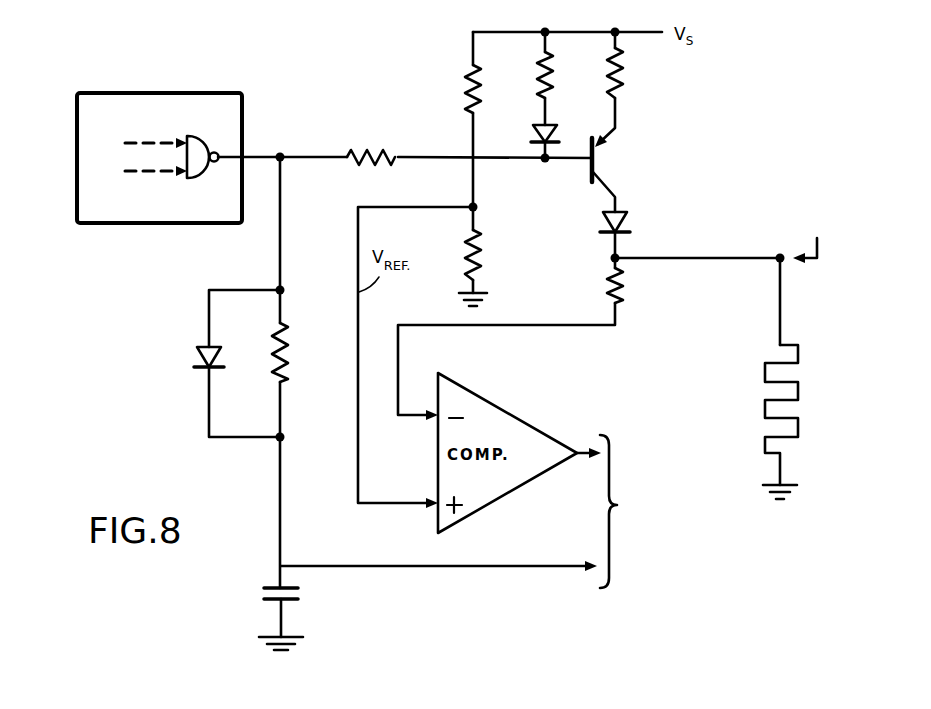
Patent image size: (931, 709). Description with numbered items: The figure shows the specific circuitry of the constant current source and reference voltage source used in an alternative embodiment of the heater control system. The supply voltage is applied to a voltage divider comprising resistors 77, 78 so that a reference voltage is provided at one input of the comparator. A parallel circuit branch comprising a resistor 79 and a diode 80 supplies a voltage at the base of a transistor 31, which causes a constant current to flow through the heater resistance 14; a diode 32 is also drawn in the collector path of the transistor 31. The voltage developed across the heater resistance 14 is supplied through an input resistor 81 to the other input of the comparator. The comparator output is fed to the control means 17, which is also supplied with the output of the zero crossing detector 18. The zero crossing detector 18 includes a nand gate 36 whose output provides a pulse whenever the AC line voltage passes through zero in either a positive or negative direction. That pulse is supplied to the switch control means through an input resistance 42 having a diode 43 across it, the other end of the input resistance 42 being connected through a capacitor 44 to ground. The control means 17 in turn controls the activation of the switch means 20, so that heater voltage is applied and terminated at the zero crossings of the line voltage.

The heater resistance 14 is at (762, 372).
The control means 17 is at (674, 511).
The zero crossing detector 18 is at (155, 93).
The switch means 20 is at (807, 214).
The transistor 31 is at (601, 161).
The diode 32 is at (629, 227).
The nand gate 36 is at (205, 140).
The input resistance 42 is at (287, 350).
The diode 43 is at (199, 351).
The capacitor 44 is at (289, 600).
The resistor 77 is at (479, 110).
The resistor 78 is at (481, 245).
The resistor 79 is at (552, 88).
The diode 80 is at (557, 131).
The input resistor 81 is at (621, 298).